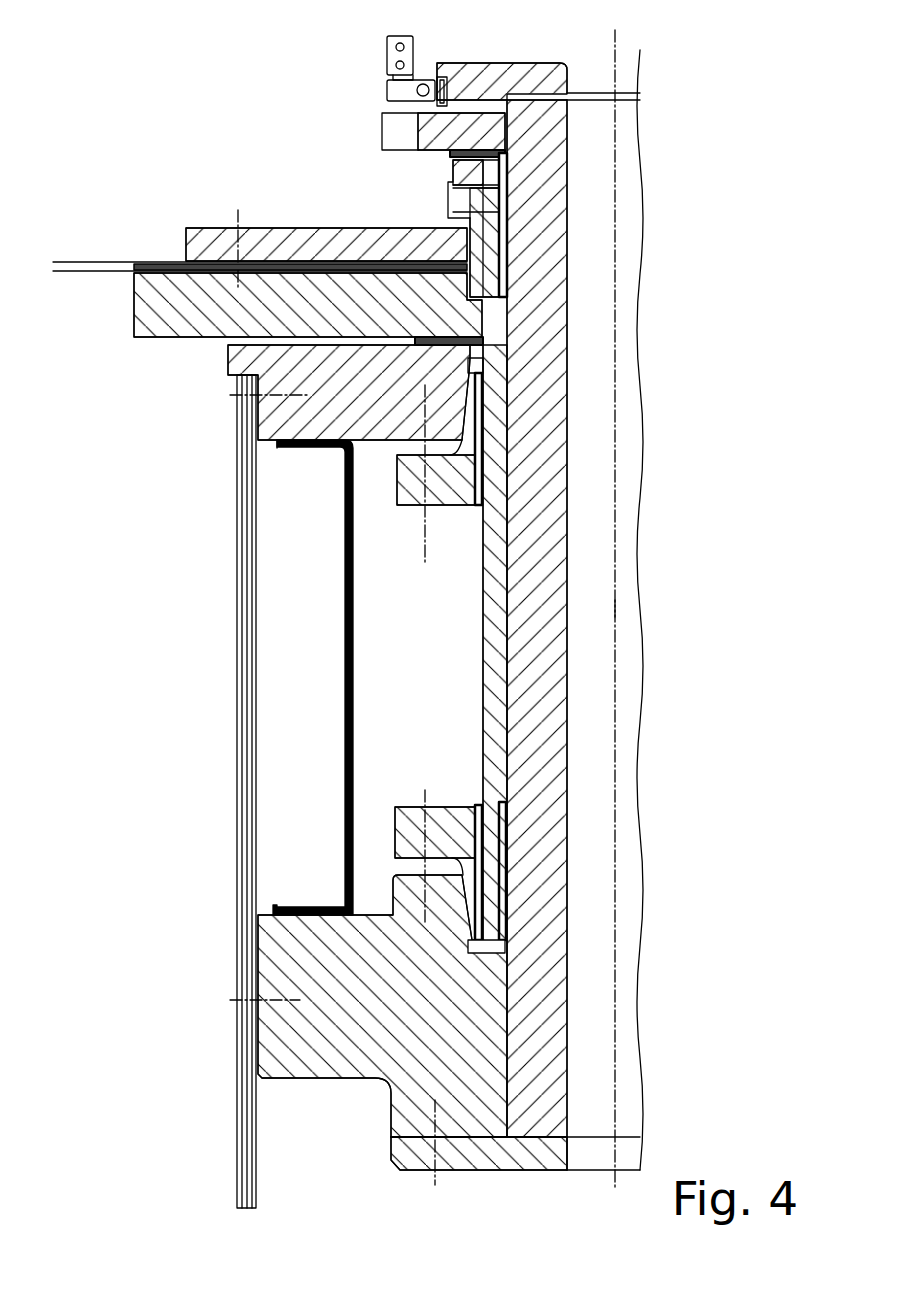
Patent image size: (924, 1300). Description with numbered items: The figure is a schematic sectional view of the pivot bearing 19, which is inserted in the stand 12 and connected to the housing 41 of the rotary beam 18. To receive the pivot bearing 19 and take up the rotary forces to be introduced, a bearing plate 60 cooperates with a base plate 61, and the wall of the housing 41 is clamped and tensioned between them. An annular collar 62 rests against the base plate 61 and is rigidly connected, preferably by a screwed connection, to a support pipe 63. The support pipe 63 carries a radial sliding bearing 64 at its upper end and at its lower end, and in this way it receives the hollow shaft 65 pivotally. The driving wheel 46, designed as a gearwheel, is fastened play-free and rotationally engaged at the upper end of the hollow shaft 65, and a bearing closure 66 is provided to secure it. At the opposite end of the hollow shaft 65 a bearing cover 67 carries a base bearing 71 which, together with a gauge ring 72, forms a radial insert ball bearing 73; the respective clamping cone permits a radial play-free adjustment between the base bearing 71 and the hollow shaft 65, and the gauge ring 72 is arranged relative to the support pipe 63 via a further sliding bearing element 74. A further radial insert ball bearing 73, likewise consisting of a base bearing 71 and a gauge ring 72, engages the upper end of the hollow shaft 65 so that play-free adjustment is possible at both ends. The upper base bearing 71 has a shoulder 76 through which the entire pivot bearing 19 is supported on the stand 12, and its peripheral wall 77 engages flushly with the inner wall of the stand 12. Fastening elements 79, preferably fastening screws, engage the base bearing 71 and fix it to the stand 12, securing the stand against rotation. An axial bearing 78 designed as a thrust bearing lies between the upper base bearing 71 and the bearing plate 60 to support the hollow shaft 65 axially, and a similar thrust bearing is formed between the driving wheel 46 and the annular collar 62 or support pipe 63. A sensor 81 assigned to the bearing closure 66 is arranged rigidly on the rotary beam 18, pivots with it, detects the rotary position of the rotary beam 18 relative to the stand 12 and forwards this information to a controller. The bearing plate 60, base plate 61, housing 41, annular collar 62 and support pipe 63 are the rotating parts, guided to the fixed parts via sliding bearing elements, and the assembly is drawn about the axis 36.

The stand 12 is at (204, 754).
The rotary beam 18 is at (259, 293).
The pivot bearing 19 is at (346, 164).
The axis 36 is at (615, 610).
The housing 41 is at (73, 268).
The driving wheel 46 is at (440, 130).
The bearing plate 60 is at (148, 323).
The base plate 61 is at (222, 232).
The annular collar 62 is at (458, 170).
The support pipe 63 is at (490, 305).
The radial sliding bearing 64 is at (503, 222).
The hollow shaft 65 is at (545, 680).
The bearing closure 66 is at (487, 73).
The bearing cover 67 is at (545, 1155).
The base bearing 71 is at (492, 440).
The gauge ring 72 is at (460, 830).
The radial insert ball bearing 73 is at (378, 458).
The sliding bearing element 74 is at (486, 405).
The shoulder 76 is at (230, 360).
The peripheral wall 77 is at (248, 432).
The axial bearing 78 is at (508, 152).
The fastening elements 79 is at (272, 418).
The sensor 81 is at (380, 52).